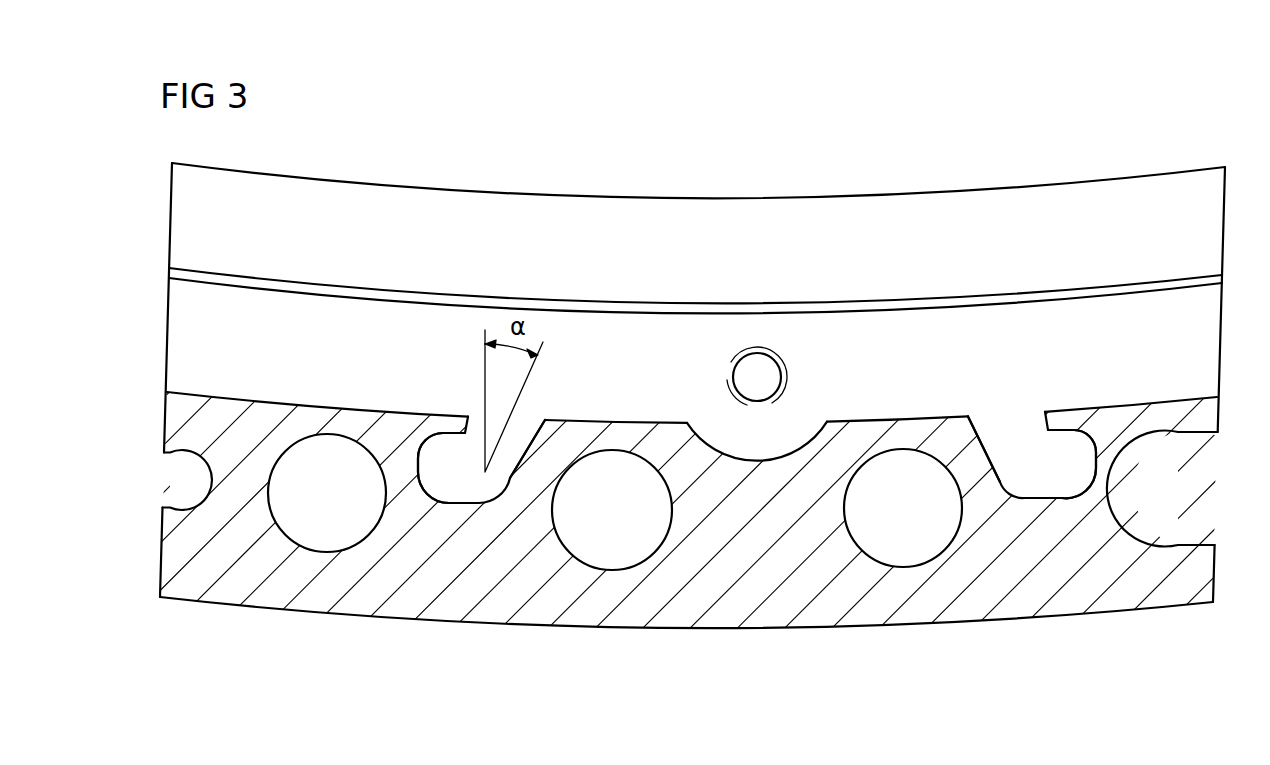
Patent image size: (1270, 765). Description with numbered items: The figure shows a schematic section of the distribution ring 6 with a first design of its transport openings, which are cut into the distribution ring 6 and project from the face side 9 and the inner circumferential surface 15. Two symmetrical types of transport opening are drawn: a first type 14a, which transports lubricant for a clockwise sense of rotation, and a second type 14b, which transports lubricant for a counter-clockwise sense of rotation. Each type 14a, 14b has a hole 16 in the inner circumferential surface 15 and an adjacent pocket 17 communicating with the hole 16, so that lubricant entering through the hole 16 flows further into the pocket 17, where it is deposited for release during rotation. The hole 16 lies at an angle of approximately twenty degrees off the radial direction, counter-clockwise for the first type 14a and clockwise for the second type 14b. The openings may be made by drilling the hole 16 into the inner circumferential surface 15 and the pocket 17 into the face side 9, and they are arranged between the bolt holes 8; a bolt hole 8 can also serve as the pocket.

The distribution ring 6 is at (1207, 338).
The bolt hole 8 is at (902, 460).
The face side 9 is at (660, 433).
The first type of transport opening 14a is at (1062, 510).
The second type of transport opening 14b is at (477, 518).
The inner circumferential surface 15 is at (397, 407).
The hole 16 is at (517, 432).
The pocket 17 is at (1067, 460).